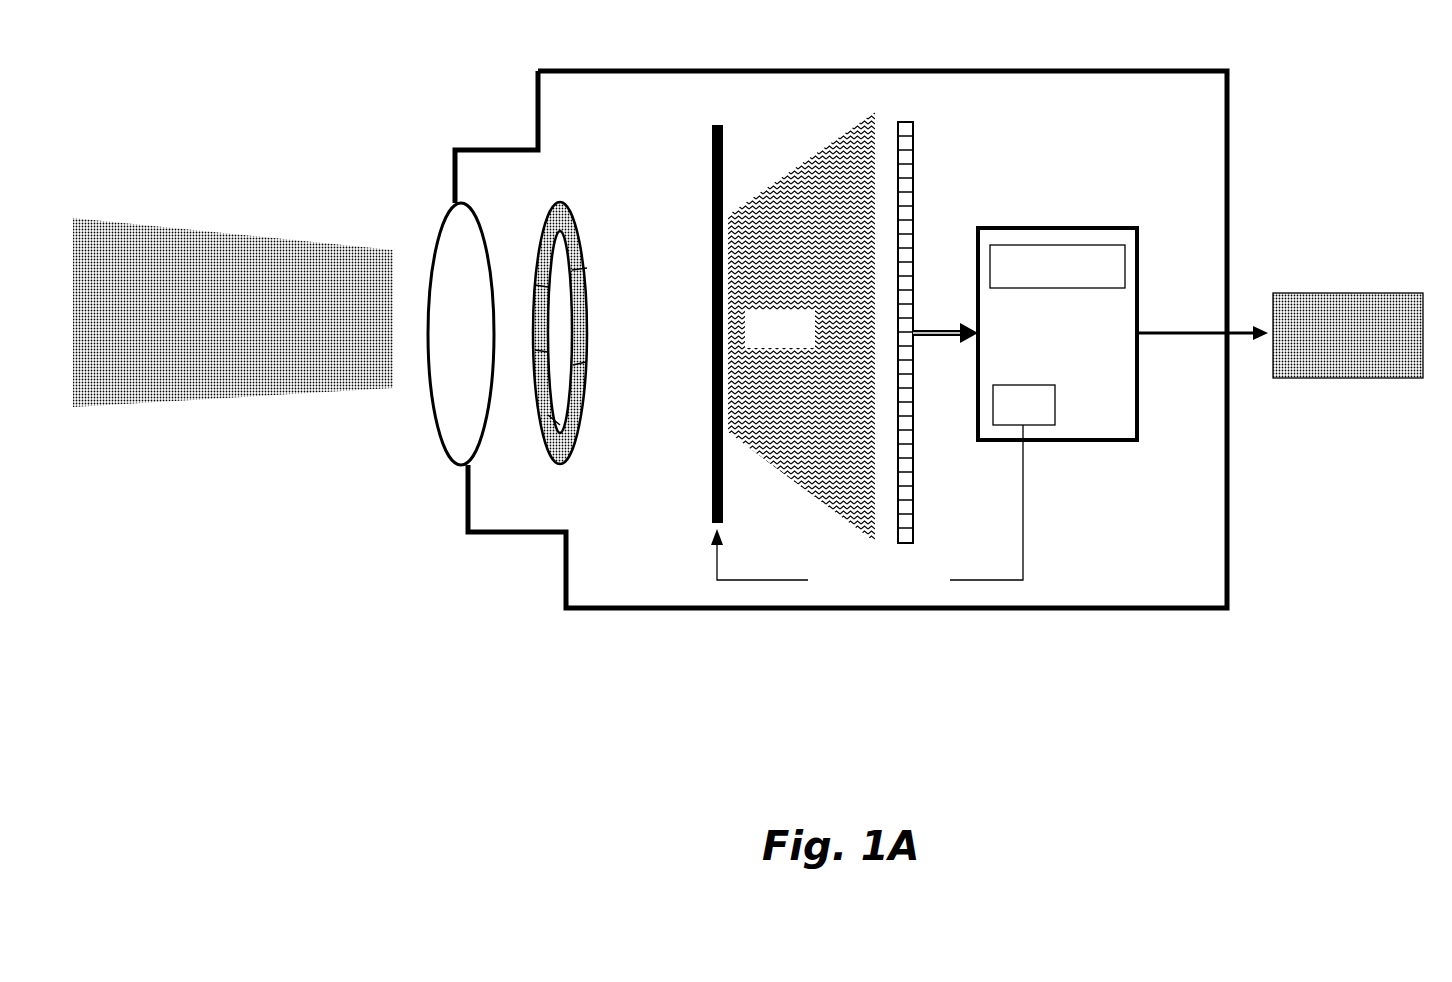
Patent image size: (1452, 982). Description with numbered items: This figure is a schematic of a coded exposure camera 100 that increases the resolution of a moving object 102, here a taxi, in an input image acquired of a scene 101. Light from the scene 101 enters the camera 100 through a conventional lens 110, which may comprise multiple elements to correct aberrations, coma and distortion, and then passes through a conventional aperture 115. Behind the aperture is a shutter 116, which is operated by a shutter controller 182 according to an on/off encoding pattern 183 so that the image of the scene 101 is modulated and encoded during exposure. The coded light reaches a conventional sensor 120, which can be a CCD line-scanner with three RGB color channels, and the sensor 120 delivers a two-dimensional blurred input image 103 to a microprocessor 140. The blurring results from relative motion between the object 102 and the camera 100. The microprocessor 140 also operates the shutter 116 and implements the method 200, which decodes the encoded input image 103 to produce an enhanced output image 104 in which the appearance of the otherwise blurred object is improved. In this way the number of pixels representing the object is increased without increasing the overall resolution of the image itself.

The camera 100 is at (790, 70).
The scene 101 is at (167, 227).
The object 102 is at (207, 307).
The blurred input image 103 is at (935, 345).
The output image 104 is at (1288, 293).
The lens 110 is at (440, 243).
The aperture 115 is at (560, 207).
The shutter 116 is at (723, 168).
The sensor 120 is at (913, 178).
The microprocessor 140 is at (1020, 228).
The shutter controller 182 is at (1002, 482).
The on/off encoding pattern 183 is at (885, 595).
The method 200 is at (1125, 267).